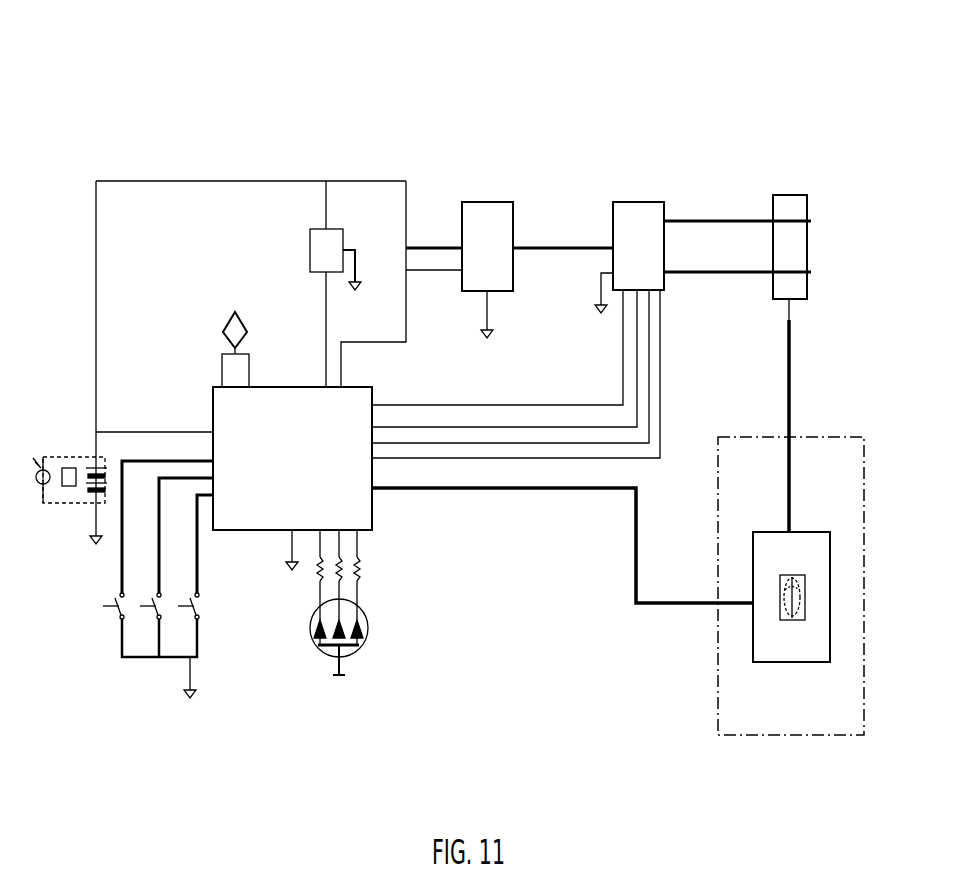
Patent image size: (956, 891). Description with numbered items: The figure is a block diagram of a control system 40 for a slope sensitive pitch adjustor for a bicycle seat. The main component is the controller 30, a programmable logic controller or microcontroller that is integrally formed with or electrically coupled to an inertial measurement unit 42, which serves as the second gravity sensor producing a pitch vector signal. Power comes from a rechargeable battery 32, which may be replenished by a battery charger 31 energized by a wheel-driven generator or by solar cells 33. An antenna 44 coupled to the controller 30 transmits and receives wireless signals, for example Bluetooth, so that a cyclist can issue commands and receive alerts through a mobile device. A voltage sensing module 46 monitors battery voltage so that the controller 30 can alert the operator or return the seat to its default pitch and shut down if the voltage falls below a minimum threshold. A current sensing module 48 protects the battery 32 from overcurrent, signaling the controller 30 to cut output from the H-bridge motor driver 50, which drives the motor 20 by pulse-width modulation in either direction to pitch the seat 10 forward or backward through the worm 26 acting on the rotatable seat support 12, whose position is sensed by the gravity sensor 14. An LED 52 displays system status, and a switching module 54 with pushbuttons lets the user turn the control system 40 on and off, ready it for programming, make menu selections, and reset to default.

The control system 40 is at (472, 78).
The seat 10 is at (716, 717).
The rotatable seat support 12 is at (830, 596).
The gravity sensor 14 is at (787, 622).
The motor 20 is at (807, 207).
The worm 26 is at (792, 398).
The controller 30 is at (335, 445).
The inertial measurement unit 42 is at (373, 390).
The battery charger 31 is at (69, 477).
The battery 32 is at (98, 456).
The solar cells 33 is at (44, 456).
The antenna 44 is at (245, 333).
The voltage sensing module 46 is at (343, 233).
The current sensing module 48 is at (513, 206).
The H-bridge motor driver 50 is at (640, 202).
The LED 52 is at (357, 648).
The switching module 54 is at (197, 641).